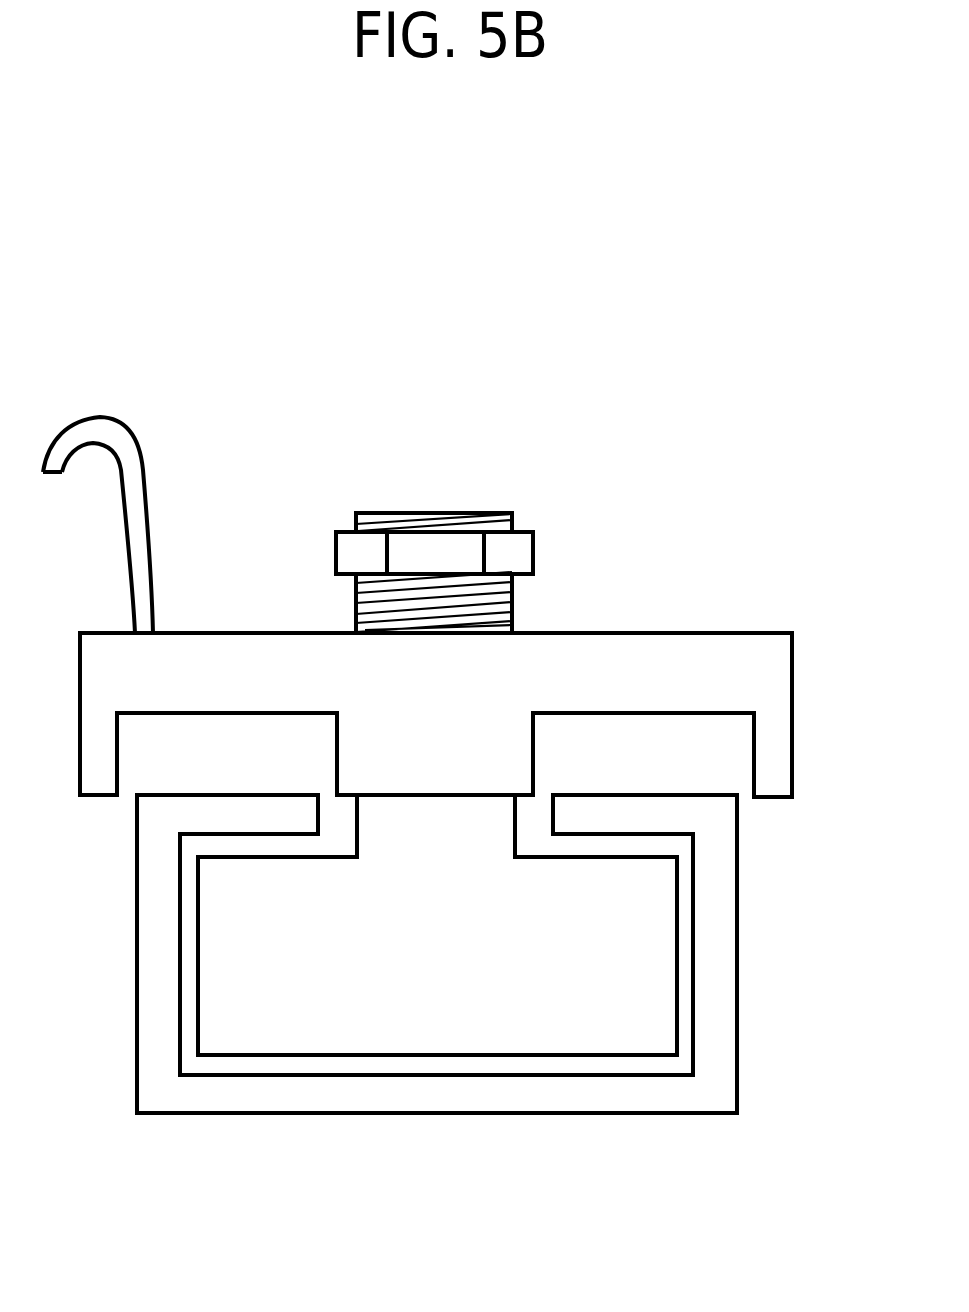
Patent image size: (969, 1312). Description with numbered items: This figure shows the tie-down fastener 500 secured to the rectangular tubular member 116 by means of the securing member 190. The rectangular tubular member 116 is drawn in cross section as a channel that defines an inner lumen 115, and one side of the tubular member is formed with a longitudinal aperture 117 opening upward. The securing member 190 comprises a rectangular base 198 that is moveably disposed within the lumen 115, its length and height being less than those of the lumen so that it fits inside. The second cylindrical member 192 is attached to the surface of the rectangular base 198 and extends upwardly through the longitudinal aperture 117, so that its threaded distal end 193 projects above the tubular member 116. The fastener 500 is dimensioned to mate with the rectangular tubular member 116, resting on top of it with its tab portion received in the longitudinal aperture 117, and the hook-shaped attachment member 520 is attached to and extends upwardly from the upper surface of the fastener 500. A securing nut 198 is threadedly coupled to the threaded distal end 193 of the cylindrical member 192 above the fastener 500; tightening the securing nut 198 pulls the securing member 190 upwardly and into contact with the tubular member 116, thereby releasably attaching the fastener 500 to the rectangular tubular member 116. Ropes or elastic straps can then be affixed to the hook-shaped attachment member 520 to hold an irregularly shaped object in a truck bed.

The fastener 500 is at (451, 717).
The hook-shaped attachment member 520 is at (127, 461).
The distal end 193 is at (498, 609).
The rectangular base 198 is at (517, 553).
The lumen 115 is at (193, 960).
The second cylindrical member 192 is at (377, 828).
The longitudinal aperture 117 is at (530, 822).
The securing member 190 is at (627, 1058).
The rectangular tubular member 116 is at (458, 1115).